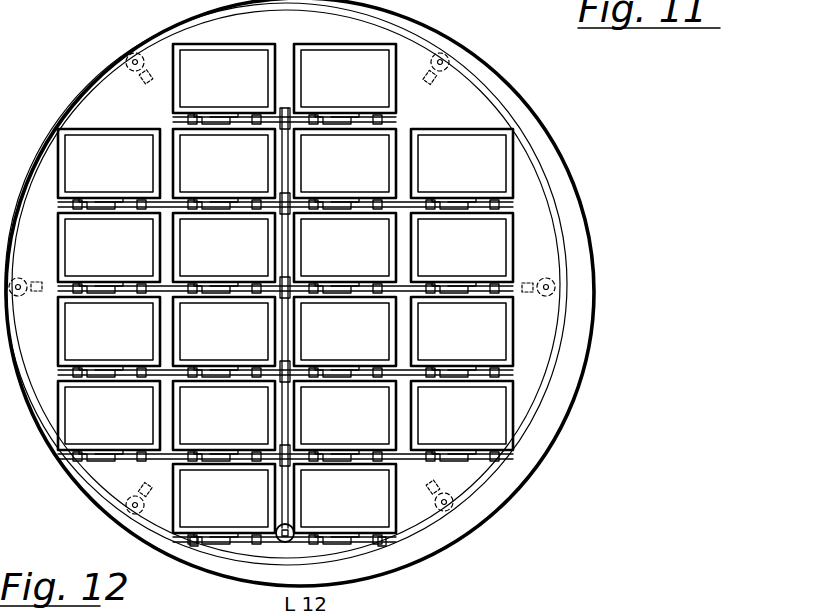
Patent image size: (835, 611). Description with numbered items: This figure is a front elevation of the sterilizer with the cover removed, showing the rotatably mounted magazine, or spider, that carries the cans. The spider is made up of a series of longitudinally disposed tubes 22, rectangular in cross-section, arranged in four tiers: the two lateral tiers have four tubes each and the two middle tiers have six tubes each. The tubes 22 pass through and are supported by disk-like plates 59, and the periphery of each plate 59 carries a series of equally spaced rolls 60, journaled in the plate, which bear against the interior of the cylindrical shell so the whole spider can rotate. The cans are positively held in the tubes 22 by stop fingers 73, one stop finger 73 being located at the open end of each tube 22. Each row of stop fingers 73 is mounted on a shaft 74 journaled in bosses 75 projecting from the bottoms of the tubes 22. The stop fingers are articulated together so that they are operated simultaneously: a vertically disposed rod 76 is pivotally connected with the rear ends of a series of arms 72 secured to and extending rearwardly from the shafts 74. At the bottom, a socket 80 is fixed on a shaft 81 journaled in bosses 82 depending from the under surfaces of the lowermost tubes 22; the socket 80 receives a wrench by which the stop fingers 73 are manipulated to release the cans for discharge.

The tubes 22 is at (162, 100).
The disk-like plates 59 is at (487, 118).
The rolls 60 is at (25, 278).
The arms 72 is at (290, 112).
The stop fingers 73 is at (112, 280).
The shaft 74 is at (268, 197).
The bosses 75 is at (430, 200).
The vertically disposed rod 76 is at (290, 162).
The socket 80 is at (280, 540).
The shaft 81 is at (388, 538).
The bosses 82 is at (196, 542).